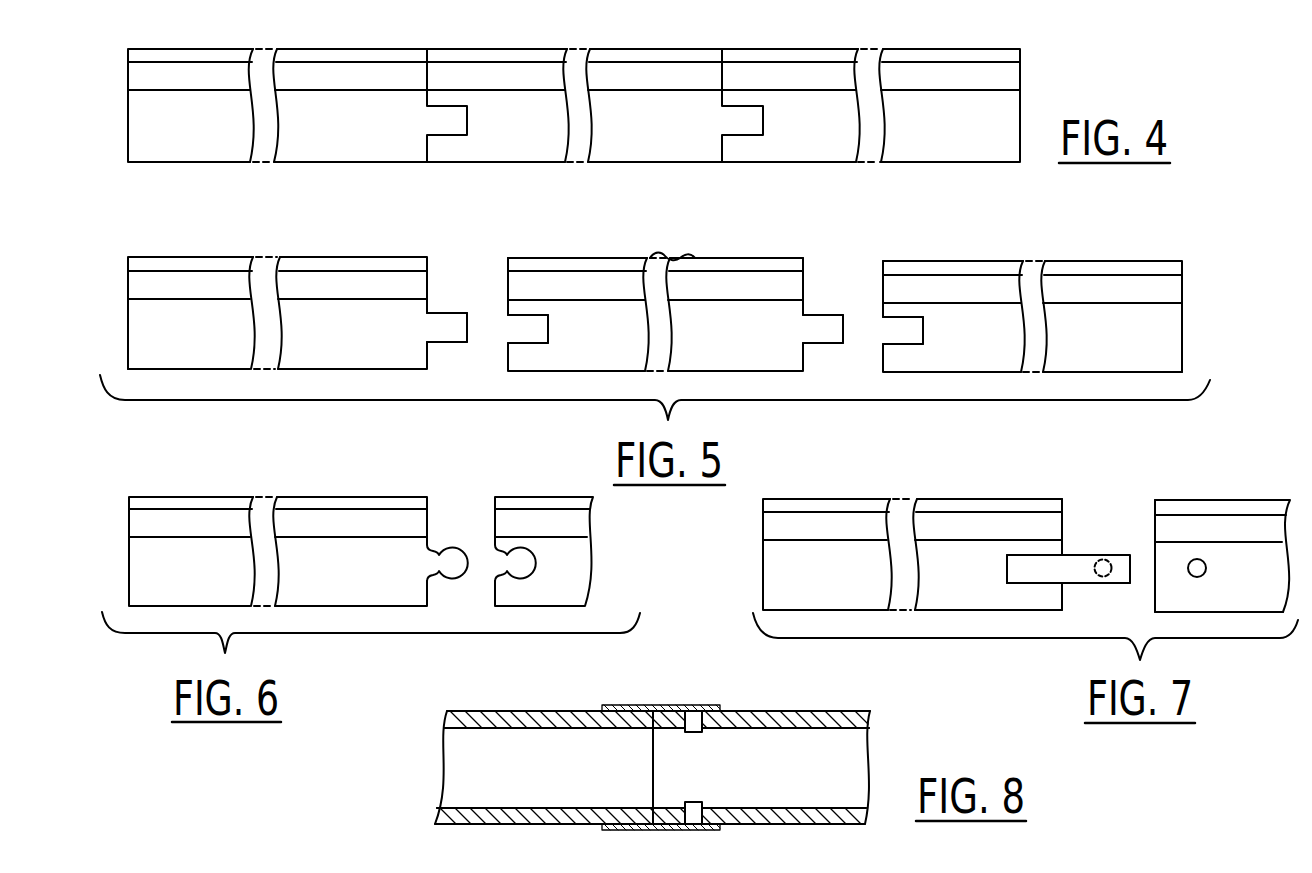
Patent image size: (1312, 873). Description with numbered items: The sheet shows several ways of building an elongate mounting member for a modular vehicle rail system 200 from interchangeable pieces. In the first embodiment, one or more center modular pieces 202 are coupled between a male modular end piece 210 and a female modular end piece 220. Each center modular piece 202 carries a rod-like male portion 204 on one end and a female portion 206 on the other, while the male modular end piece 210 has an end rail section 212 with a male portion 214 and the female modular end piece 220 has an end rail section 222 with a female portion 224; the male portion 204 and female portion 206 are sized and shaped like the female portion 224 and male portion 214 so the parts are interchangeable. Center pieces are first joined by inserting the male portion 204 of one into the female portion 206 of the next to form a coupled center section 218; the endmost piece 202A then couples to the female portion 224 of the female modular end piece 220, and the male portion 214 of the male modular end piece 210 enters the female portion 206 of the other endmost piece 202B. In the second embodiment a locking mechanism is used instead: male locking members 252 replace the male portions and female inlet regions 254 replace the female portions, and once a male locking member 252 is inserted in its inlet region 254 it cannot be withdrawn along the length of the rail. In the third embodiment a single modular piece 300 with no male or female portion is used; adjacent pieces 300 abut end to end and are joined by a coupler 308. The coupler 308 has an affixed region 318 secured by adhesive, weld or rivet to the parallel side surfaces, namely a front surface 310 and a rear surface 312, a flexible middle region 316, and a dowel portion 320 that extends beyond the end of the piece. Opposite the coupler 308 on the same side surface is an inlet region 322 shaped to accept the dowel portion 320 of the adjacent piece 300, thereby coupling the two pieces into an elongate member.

In FIG. 4, the modular vehicle rail system 200 is at (574, 108).
In FIG. 4, the center modular piece 202 is at (614, 163).
In FIG. 5, the center modular piece 202 is at (585, 253).
In FIG. 4, the endmost center modular piece 202A is at (492, 167).
In FIG. 5, the endmost center modular piece 202A is at (535, 258).
In FIG. 4, the other endmost center modular piece 202B is at (698, 44).
In FIG. 5, the other endmost center modular piece 202B is at (780, 258).
In FIG. 5, the male portion 204 is at (820, 313).
In FIG. 5, the female portion 206 is at (533, 329).
In FIG. 4, the male modular end piece 210 is at (365, 155).
In FIG. 5, the male modular end piece 210 is at (266, 245).
In FIG. 6, the male modular end piece 210 is at (301, 525).
In FIG. 5, the end rail section 212 is at (148, 330).
In FIG. 5, the male portion 214 is at (448, 312).
In FIG. 5, the coupled center section 218 is at (668, 248).
In FIG. 4, the female modular end piece 220 is at (830, 156).
In FIG. 5, the female modular end piece 220 is at (1058, 247).
In FIG. 5, the end rail section 222 is at (1163, 328).
In FIG. 5, the female portion 224 is at (903, 330).
In FIG. 6, the male locking member 252 is at (459, 565).
In FIG. 6, the female inlet region 254 is at (518, 565).
In FIG. 8, the modular piece 300 is at (658, 755).
In FIG. 7, the coupler 308 is at (1046, 596).
In FIG. 8, the front surface 310 is at (560, 826).
In FIG. 8, the rear surface 312 is at (552, 708).
In FIG. 7, the flexible middle region 316 is at (1080, 580).
In FIG. 8, the flexible middle region 316 is at (685, 705).
In FIG. 7, the affixed region 318 is at (1035, 570).
In FIG. 7, the dowel portion 320 is at (1099, 585).
In FIG. 8, the dowel portion 320 is at (640, 706).
In FIG. 7, the inlet region 322 is at (1203, 576).